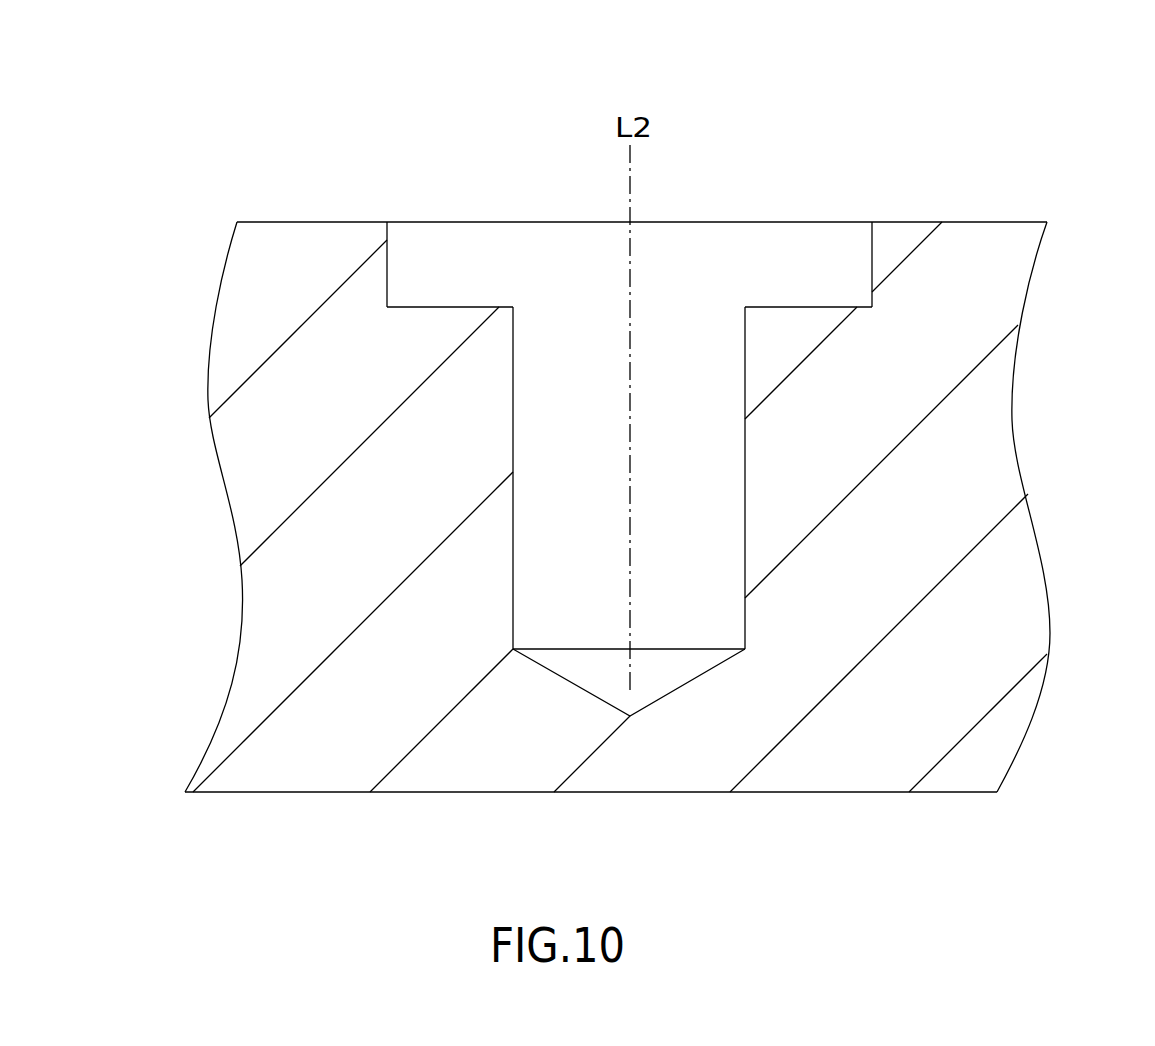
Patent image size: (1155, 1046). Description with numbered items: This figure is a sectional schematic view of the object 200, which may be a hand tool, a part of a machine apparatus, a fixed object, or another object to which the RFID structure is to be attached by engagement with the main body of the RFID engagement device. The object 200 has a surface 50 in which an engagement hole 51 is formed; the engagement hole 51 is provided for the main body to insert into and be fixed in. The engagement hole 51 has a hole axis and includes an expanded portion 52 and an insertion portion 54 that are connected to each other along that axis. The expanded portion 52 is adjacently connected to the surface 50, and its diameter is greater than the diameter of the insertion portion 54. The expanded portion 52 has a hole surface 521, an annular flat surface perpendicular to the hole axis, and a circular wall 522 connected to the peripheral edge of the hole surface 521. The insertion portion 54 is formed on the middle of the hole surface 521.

The surface 50 is at (987, 222).
The engagement hole 51 is at (564, 377).
The expanded portion 52 is at (553, 189).
The hole surface 521 is at (466, 307).
The circular wall 522 is at (388, 265).
The insertion portion 54 is at (745, 348).
The object 200 is at (857, 795).